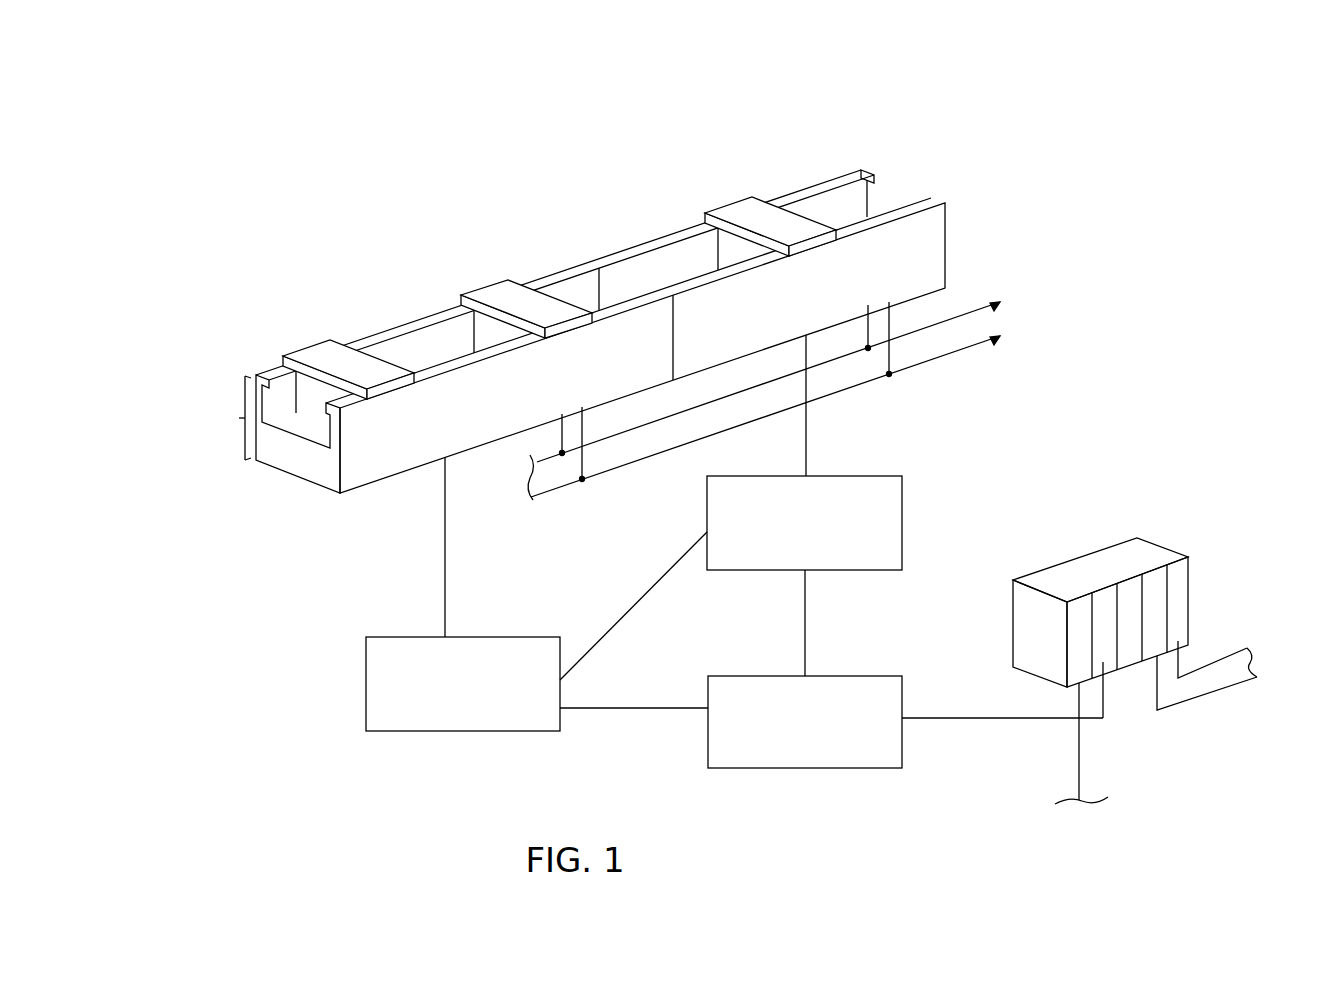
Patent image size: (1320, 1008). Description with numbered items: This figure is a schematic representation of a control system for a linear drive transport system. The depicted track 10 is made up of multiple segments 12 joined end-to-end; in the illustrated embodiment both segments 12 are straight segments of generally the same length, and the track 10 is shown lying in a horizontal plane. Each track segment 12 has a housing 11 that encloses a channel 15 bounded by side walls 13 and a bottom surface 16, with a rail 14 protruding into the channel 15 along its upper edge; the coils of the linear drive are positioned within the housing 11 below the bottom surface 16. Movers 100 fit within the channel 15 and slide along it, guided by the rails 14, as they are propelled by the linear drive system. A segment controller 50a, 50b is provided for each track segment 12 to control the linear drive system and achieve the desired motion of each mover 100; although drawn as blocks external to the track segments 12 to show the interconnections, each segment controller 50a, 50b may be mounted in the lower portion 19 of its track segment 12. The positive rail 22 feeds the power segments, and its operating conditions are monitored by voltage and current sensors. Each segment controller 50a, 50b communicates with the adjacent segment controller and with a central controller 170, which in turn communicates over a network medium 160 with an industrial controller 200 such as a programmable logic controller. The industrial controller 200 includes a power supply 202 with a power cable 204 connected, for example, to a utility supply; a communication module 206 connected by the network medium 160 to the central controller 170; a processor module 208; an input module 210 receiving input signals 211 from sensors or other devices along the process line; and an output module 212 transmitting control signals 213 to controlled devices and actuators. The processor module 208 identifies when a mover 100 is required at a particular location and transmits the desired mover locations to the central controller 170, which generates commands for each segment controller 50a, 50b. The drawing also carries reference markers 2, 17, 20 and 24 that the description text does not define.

The track 10 is at (918, 118).
The housing 11 is at (690, 331).
The track segment 12 is at (634, 247).
The side walls 13 is at (612, 285).
The rail 14 is at (808, 192).
The channel 15 is at (862, 203).
The bottom surface 16 is at (308, 435).
The upper portion of track 17 is at (242, 400).
The lower portion 19 is at (243, 440).
The section line 2 is at (447, 283).
The power supply 20 is at (1058, 268).
The positive rail 22 is at (980, 305).
The return line 24 is at (985, 342).
The segment controller 50a is at (478, 637).
The segment controller 50b is at (868, 478).
The mover 100 is at (742, 208).
The network medium 160 is at (628, 612).
The central controller 170 is at (740, 769).
The industrial controller 200 is at (1073, 603).
The power supply 202 is at (1048, 572).
The power cable 204 is at (1082, 768).
The communication module 206 is at (1090, 600).
The processor module 208 is at (1133, 588).
The input module 210 is at (1157, 580).
The input signals 211 is at (1198, 697).
The output module 212 is at (1190, 570).
The control signals 213 is at (1214, 662).